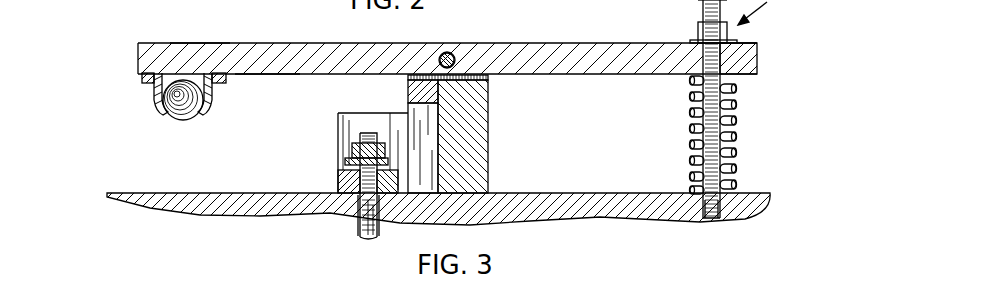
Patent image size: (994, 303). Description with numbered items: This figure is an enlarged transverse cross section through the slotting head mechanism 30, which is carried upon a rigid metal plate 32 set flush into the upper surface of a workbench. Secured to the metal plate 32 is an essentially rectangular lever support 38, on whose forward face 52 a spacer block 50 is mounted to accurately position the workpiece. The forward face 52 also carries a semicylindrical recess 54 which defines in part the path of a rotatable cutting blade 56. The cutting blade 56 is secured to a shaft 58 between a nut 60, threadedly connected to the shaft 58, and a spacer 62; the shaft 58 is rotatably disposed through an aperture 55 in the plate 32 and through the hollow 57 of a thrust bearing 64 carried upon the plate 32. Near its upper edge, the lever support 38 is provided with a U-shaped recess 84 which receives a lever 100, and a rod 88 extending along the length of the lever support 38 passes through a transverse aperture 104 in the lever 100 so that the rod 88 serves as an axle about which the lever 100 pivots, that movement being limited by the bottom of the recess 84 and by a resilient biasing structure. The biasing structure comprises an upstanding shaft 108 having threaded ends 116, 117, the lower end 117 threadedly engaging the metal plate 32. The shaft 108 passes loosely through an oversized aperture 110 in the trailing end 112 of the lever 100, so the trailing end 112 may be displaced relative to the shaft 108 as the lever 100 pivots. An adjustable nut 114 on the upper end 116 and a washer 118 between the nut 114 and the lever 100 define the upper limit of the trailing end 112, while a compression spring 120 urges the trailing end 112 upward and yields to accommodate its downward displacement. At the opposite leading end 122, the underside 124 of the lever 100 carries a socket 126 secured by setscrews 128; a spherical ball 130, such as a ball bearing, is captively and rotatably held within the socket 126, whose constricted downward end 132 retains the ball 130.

The slotting head mechanism 30 is at (227, 147).
The metal plate 32 is at (648, 210).
The lever support 38 is at (477, 172).
The spacer block 50 is at (338, 117).
The forward face 52 is at (408, 92).
The semicylindrical recess 54 is at (437, 143).
The aperture 55 is at (381, 222).
The cutting blade 56 is at (354, 148).
The hollow 57 is at (335, 212).
The shaft 58 is at (352, 232).
The nut 60 is at (357, 143).
The spacer 62 is at (345, 162).
The thrust bearing 64 is at (338, 180).
The U-shaped recess 84 is at (488, 78).
The rod 88 is at (452, 55).
The lever 100 is at (537, 53).
The transverse aperture 104 is at (440, 55).
The upstanding shaft 108 is at (735, 148).
The aperture 110 is at (742, 45).
The trailing end 112 is at (753, 60).
The adjustable nut 114 is at (696, 27).
The upper threaded end 116 is at (698, 3).
The lower threaded end 117 is at (710, 220).
The washer 118 is at (690, 42).
The compression spring 120 is at (736, 171).
The leading end 122 is at (186, 56).
The underside 124 is at (245, 74).
The socket 126 is at (158, 97).
The setscrews 128 is at (150, 80).
The spherical ball 130 is at (173, 120).
The downward end 132 is at (212, 105).